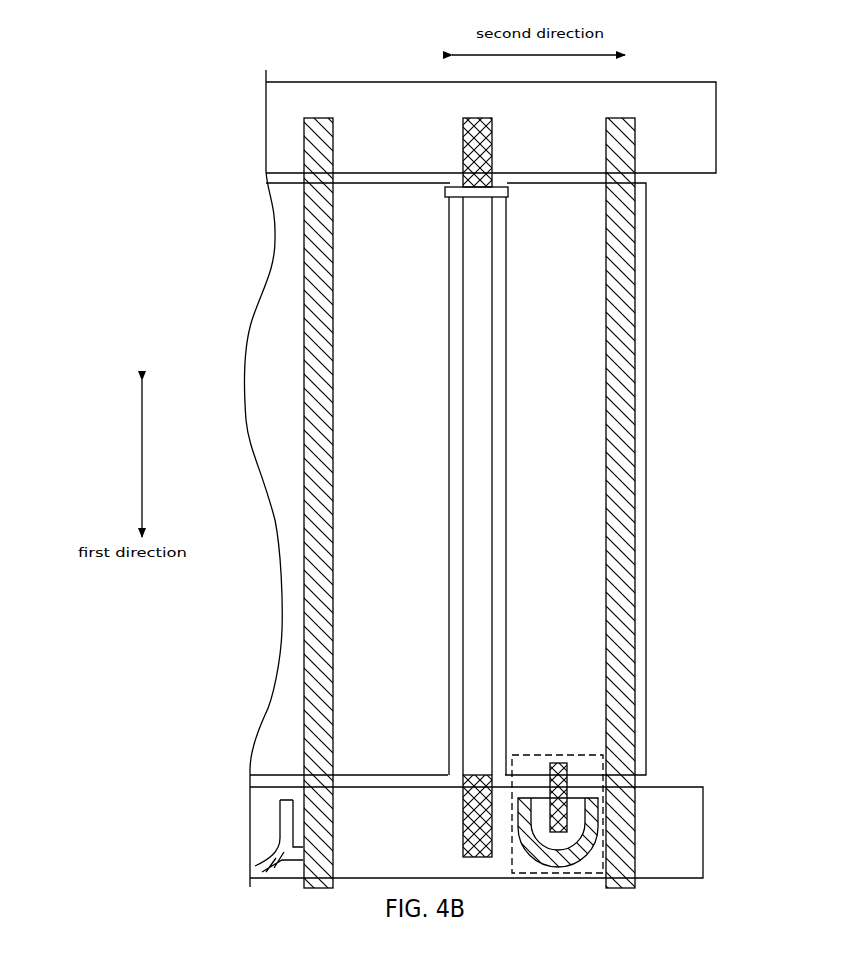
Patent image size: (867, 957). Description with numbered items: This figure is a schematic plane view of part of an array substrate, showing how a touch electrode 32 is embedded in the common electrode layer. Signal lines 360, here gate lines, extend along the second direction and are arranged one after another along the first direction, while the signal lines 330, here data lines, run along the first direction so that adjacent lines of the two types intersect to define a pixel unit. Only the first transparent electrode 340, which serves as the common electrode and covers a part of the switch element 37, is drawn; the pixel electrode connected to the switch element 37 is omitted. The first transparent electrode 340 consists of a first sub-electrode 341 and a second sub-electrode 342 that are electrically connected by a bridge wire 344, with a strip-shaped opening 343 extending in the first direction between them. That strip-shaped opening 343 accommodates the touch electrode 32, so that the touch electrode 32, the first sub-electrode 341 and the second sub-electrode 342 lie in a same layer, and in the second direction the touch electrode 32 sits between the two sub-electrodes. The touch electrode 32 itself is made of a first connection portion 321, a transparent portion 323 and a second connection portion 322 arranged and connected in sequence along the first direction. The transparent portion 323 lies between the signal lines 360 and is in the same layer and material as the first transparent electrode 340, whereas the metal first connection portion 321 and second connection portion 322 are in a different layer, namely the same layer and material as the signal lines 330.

The touch electrode 32 is at (628, 487).
The first connection portion 321 is at (497, 133).
The second connection portion 322 is at (481, 775).
The transparent portion 323 is at (478, 354).
The signal lines 330 is at (317, 366).
The first transparent electrode 340 is at (327, 400).
The first sub-electrode 341 is at (415, 486).
The second sub-electrode 342 is at (542, 486).
The strip-shaped opening 343 is at (455, 583).
The bridge wire 344 is at (450, 203).
The signal lines 360 is at (298, 105).
The switch element 37 is at (572, 755).